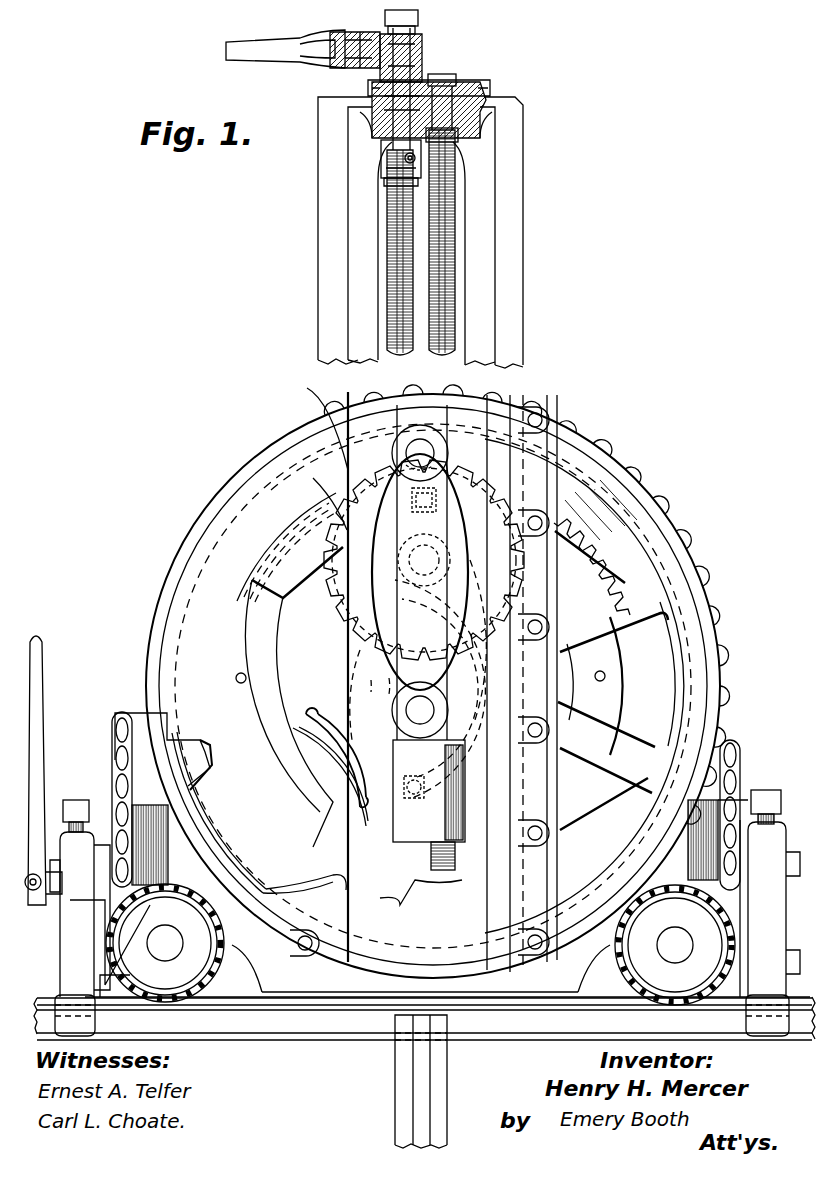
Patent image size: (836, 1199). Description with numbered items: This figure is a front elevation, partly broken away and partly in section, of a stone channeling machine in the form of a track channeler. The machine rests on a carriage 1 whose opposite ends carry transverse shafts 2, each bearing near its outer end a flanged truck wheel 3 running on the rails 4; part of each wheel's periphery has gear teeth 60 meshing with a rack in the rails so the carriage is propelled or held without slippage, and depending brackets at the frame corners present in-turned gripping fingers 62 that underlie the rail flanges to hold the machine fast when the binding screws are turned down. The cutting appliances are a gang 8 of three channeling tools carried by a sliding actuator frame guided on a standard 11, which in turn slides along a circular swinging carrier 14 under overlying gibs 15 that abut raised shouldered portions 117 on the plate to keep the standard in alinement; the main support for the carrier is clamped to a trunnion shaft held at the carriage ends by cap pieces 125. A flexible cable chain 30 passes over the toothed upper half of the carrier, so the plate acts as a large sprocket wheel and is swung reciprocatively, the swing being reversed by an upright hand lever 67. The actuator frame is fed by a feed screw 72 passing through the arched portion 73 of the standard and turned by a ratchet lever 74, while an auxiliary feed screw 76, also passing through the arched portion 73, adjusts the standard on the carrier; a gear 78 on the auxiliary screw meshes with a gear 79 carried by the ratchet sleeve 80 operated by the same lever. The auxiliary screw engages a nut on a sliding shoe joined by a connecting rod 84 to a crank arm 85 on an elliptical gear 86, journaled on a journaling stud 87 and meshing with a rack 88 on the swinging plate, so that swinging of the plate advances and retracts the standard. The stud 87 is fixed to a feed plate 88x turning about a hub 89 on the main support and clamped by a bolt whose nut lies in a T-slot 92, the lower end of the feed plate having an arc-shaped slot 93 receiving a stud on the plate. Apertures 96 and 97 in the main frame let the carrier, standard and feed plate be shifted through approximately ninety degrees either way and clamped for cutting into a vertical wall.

The carriage 1 is at (317, 980).
The transverse shaft 2 is at (164, 949).
The flanged truck wheel 3 is at (206, 972).
The rail 4 is at (498, 1028).
The gang of channeling tools 8 is at (407, 1097).
The standard 11 is at (510, 193).
The swinging carrier 14 is at (702, 628).
The gib 15 is at (523, 470).
The flexible cable chain 30 is at (713, 596).
The gear teeth 60 is at (228, 946).
The gripping finger 62 is at (84, 1003).
The hand lever 67 is at (40, 699).
The feed screw 72 is at (397, 255).
The arched portion 73 is at (485, 108).
The ratchet lever 74 is at (262, 50).
The auxiliary feed screw 76 is at (442, 268).
The gear 78 is at (460, 86).
The gear 79 is at (377, 82).
The ratchet sleeve 80 is at (425, 62).
The connecting rod 84 is at (413, 610).
The crank arm 85 is at (418, 450).
The elliptical gear 86 is at (318, 486).
The journaling stud 87 is at (345, 592).
The rack 88 is at (607, 573).
The feed plate 88x is at (300, 700).
The hub 89 is at (350, 668).
The T-slot 92 is at (282, 546).
The arc-shaped slot 93 is at (357, 770).
The aperture 96 is at (236, 678).
The aperture 97 is at (607, 676).
The raised shouldered portion 117 is at (552, 498).
The cap piece 125 is at (93, 810).